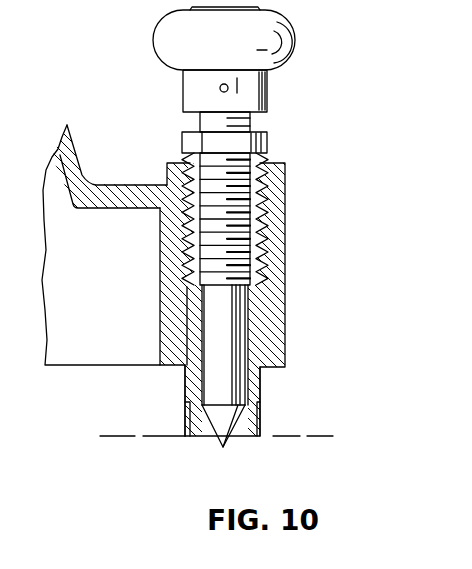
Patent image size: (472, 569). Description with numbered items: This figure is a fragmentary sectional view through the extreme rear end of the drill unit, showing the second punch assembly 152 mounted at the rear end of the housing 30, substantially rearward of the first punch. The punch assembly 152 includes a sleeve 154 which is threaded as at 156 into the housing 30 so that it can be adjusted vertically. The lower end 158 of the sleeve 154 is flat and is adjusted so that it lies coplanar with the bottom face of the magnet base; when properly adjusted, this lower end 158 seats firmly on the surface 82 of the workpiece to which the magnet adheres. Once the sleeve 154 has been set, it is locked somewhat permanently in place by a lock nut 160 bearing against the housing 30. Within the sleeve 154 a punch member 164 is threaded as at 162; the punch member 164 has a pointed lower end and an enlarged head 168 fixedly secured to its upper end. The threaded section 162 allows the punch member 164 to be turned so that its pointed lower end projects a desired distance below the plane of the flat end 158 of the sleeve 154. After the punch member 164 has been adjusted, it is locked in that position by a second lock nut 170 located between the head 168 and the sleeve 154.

The housing 30 is at (292, 247).
The surface 82 is at (320, 435).
The second punch assembly 152 is at (278, 116).
The sleeve 154 is at (270, 378).
The threads 156 is at (268, 217).
The lower end of sleeve 158 is at (250, 438).
The lock nut 160 is at (287, 173).
The threaded section 162 is at (196, 226).
The punch member 164 is at (238, 328).
The enlarged head 168 is at (284, 23).
The lock nut 170 is at (268, 144).